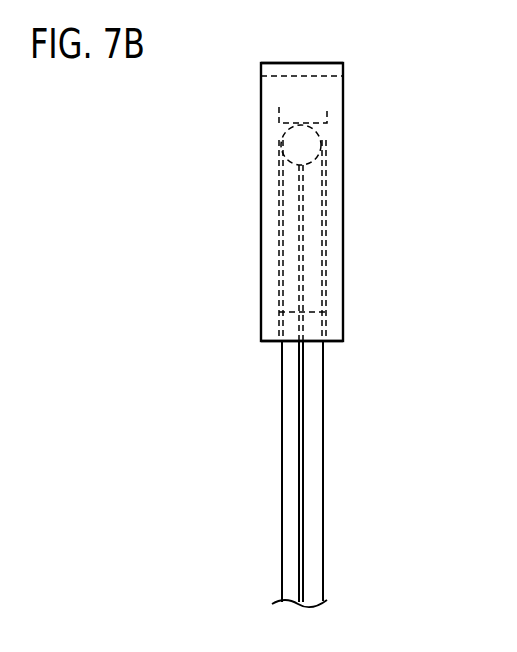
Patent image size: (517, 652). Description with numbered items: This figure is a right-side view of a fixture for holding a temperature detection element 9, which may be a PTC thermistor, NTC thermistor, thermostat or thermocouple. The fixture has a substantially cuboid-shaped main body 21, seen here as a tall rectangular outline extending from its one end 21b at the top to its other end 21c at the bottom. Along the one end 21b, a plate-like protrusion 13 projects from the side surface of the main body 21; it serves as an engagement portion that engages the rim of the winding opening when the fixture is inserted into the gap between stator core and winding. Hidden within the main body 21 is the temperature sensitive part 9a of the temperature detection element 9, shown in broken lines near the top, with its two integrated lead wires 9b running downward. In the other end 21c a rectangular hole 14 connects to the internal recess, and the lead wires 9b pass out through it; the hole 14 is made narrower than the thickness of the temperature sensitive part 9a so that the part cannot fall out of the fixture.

The main body 21 is at (261, 241).
The one end of the main body 21b is at (281, 63).
The other end of the main body 21c is at (333, 343).
The protrusion 13 is at (343, 75).
The temperature sensitive part 9a is at (321, 138).
The hole 14 is at (277, 344).
The temperature detection element 9 is at (282, 445).
The lead wires 9b is at (285, 558).